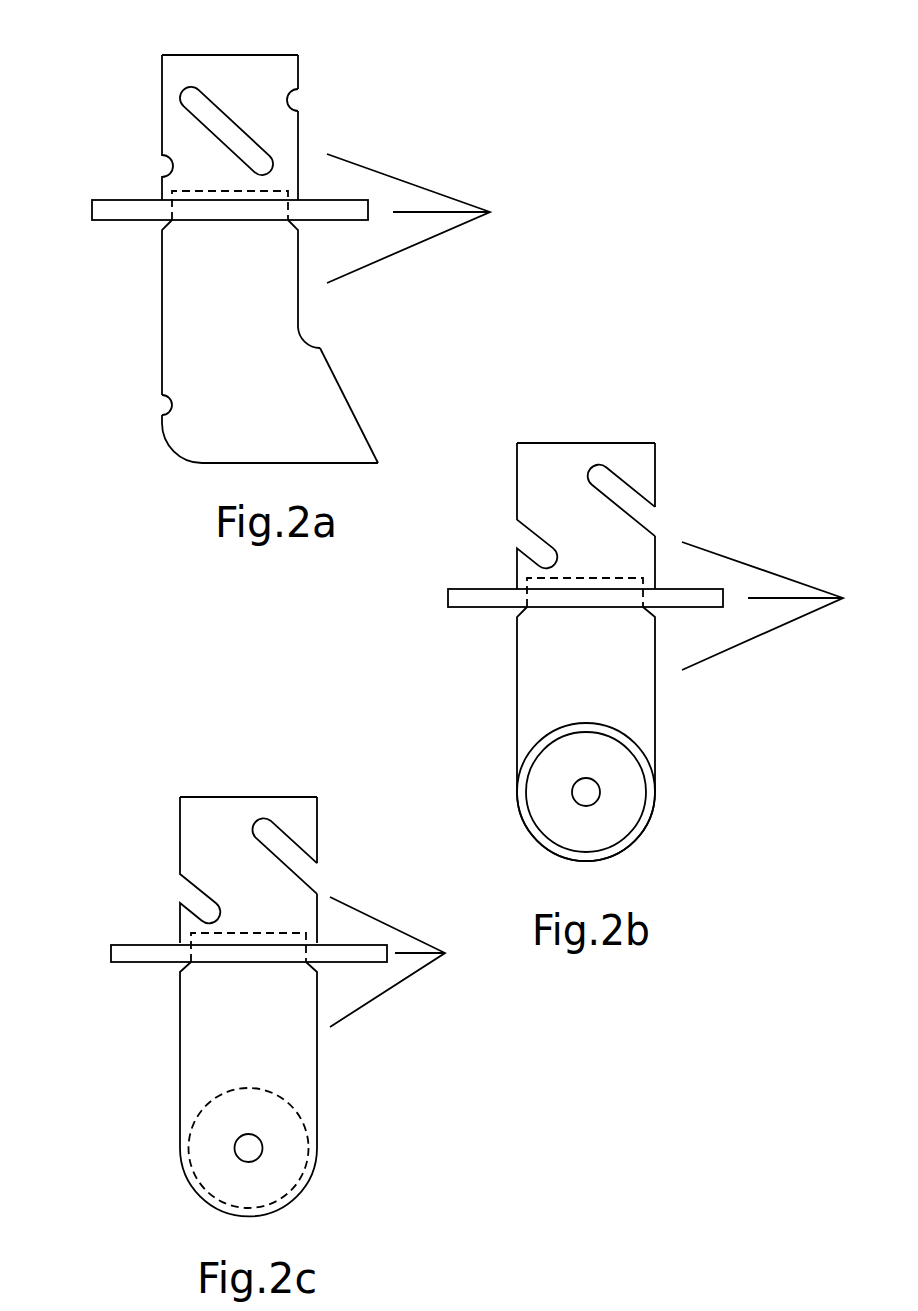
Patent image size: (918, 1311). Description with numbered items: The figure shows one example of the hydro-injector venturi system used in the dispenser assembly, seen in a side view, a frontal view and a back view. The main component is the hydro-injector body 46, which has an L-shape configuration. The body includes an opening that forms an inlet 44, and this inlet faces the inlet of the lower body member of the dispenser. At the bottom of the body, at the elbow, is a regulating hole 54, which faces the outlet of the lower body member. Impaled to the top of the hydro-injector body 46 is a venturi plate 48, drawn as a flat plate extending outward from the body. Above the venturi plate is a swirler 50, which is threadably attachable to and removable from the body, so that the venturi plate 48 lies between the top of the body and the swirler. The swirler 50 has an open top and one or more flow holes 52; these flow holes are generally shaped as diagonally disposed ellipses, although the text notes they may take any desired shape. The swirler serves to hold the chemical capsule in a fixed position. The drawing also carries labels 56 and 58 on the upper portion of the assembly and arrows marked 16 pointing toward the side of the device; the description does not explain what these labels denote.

In FIG. 2A, the insertion direction into bracket 16 is at (424, 218).
In FIG. 2B, the insertion direction into bracket 16 is at (779, 606).
In FIG. 2C, the insertion direction into bracket 16 is at (404, 962).
In FIG. 2A, the inlet 44 is at (350, 403).
In FIG. 2B, the inlet 44 is at (620, 812).
In FIG. 2C, the inlet 44 is at (283, 1168).
In FIG. 2A, the hydro-injector body 46 is at (160, 333).
In FIG. 2B, the hydro-injector body 46 is at (593, 680).
In FIG. 2C, the hydro-injector body 46 is at (256, 1037).
In FIG. 2A, the venturi plate 48 is at (92, 205).
In FIG. 2B, the venturi plate 48 is at (448, 596).
In FIG. 2C, the venturi plate 48 is at (111, 951).
In FIG. 2A, the swirler 50 is at (162, 115).
In FIG. 2B, the swirler 50 is at (535, 478).
In FIG. 2C, the swirler 50 is at (197, 832).
In FIG. 2A, the flow holes 52 is at (300, 100).
In FIG. 2B, the flow holes 52 is at (653, 518).
In FIG. 2C, the flow holes 52 is at (315, 872).
In FIG. 2A, the regulating hole 54 is at (160, 405).
In FIG. 2B, the regulating hole 54 is at (574, 801).
In FIG. 2C, the regulating hole 54 is at (236, 1153).
In FIG. 2A, the top edge 56 is at (222, 55).
In FIG. 2B, the top edge 56 is at (572, 443).
In FIG. 2C, the top edge 56 is at (225, 797).
In FIG. 2A, the diagonal slot 58 is at (226, 131).